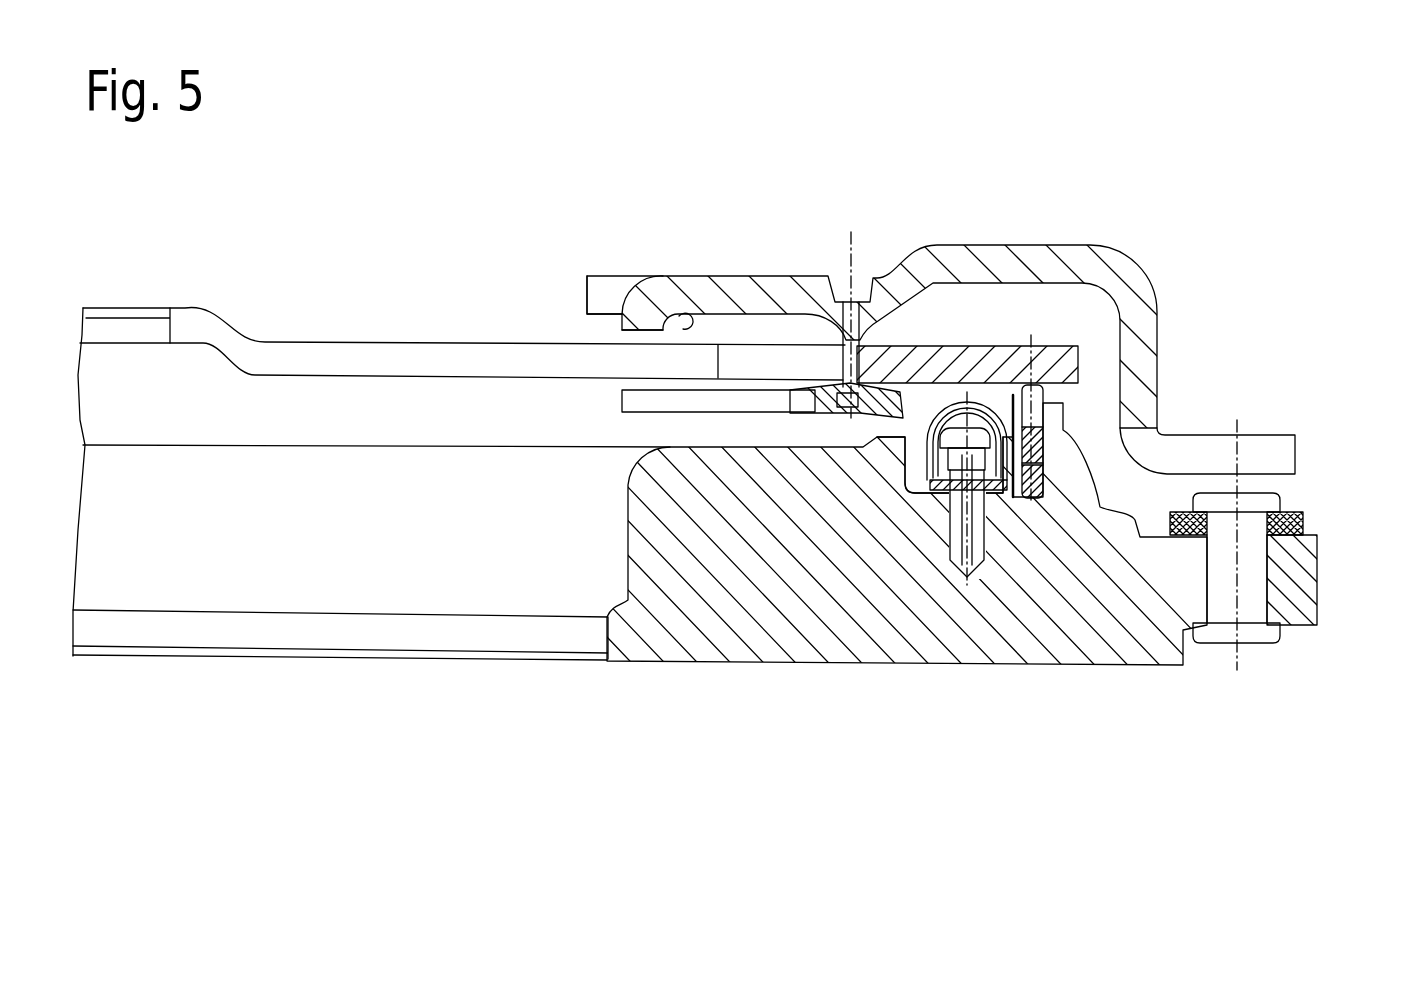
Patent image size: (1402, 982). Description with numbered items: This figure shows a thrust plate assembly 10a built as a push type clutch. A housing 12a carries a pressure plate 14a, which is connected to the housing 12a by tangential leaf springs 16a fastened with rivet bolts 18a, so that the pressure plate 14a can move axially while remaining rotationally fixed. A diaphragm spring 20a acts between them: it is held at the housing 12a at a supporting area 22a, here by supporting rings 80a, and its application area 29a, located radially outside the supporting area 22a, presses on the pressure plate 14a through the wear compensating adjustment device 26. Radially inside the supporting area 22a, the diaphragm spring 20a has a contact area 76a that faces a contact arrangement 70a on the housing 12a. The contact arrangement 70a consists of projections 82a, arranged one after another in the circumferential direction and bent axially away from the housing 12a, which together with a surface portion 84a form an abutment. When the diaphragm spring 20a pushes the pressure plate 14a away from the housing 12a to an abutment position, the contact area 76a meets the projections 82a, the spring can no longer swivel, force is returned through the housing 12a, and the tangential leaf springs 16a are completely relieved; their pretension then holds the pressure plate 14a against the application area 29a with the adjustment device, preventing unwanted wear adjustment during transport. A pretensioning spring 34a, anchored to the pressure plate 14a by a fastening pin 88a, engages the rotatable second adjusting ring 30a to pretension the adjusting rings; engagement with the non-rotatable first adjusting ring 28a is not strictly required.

The thrust plate assembly 10a is at (827, 112).
The housing 12a is at (1078, 245).
The pressure plate 14a is at (1103, 662).
The tangential leaf springs 16a is at (1297, 515).
The rivet bolts 18a is at (1268, 643).
The diaphragm spring 20a is at (470, 341).
The supporting area 22a is at (846, 280).
The wear compensating adjustment device 26 is at (1053, 436).
The first adjusting ring 28a is at (1045, 403).
The application area 29a is at (1043, 347).
The second adjusting ring 30a is at (1053, 484).
The pretensioning spring 34a is at (885, 457).
The contact arrangement 70a is at (690, 313).
The contact area 76a is at (588, 298).
The supporting rings 80a is at (663, 402).
The projections 82a is at (643, 345).
The surface portion 84a is at (643, 345).
The fastening pin 88a is at (957, 525).